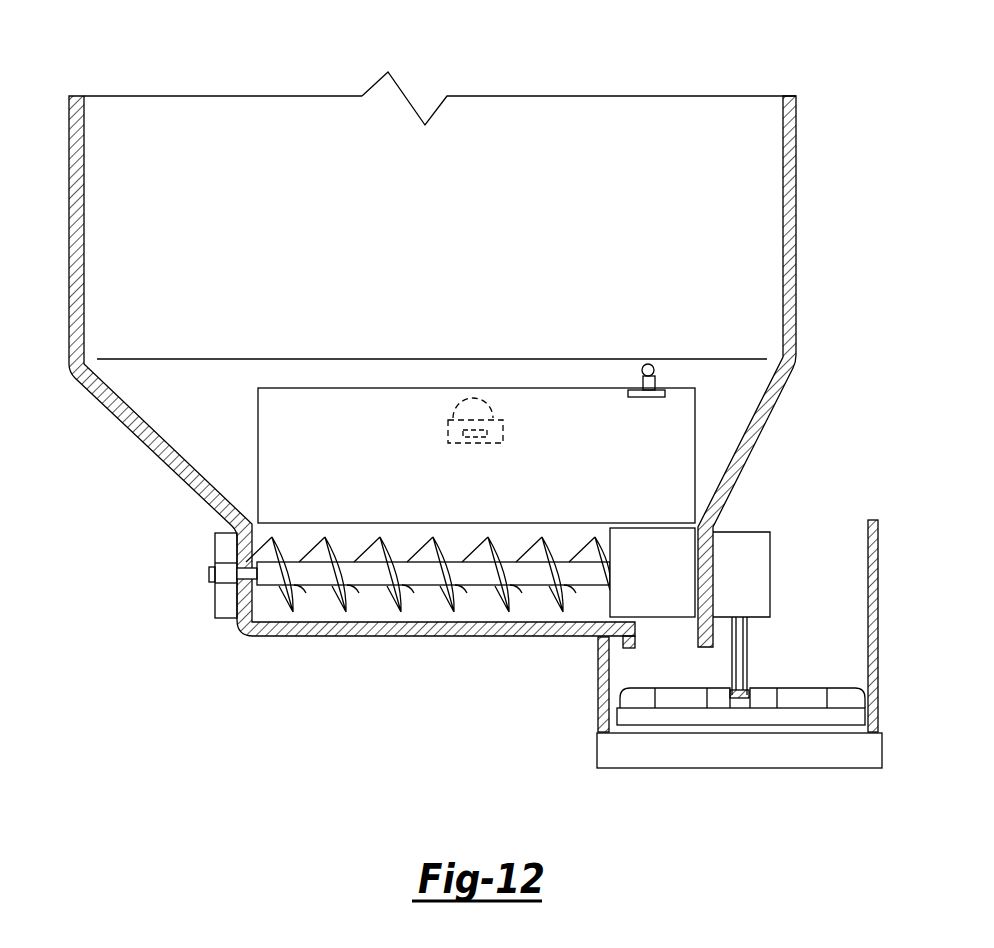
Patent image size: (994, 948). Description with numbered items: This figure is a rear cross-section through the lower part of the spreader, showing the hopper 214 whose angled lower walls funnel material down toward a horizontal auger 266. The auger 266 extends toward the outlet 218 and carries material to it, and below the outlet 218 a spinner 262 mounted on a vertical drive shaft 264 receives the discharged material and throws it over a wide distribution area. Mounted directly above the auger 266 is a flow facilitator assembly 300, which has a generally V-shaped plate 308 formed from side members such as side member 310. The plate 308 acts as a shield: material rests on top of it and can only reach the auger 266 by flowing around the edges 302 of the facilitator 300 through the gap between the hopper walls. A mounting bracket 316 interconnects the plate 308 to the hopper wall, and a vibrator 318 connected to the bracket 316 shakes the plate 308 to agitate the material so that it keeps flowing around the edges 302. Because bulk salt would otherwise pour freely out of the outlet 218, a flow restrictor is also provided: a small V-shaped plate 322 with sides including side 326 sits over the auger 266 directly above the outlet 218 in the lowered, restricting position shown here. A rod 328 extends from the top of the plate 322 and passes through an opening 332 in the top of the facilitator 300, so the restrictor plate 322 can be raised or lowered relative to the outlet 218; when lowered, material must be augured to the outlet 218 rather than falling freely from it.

The hopper 214 is at (68, 152).
The outlet 218 is at (598, 670).
The spinner 262 is at (842, 693).
The vertical drive shaft 264 is at (750, 650).
The horizontal auger 266 is at (397, 601).
The flow facilitator assembly 300 is at (224, 389).
The edges 302 is at (409, 570).
The V-shaped plate 308 is at (538, 378).
The side member 310 is at (391, 434).
The mounting bracket 316 is at (457, 441).
The vibrator 318 is at (460, 397).
The small plate 322 is at (663, 624).
The side 326 is at (678, 565).
The rod 328 is at (649, 363).
The opening 332 is at (637, 398).